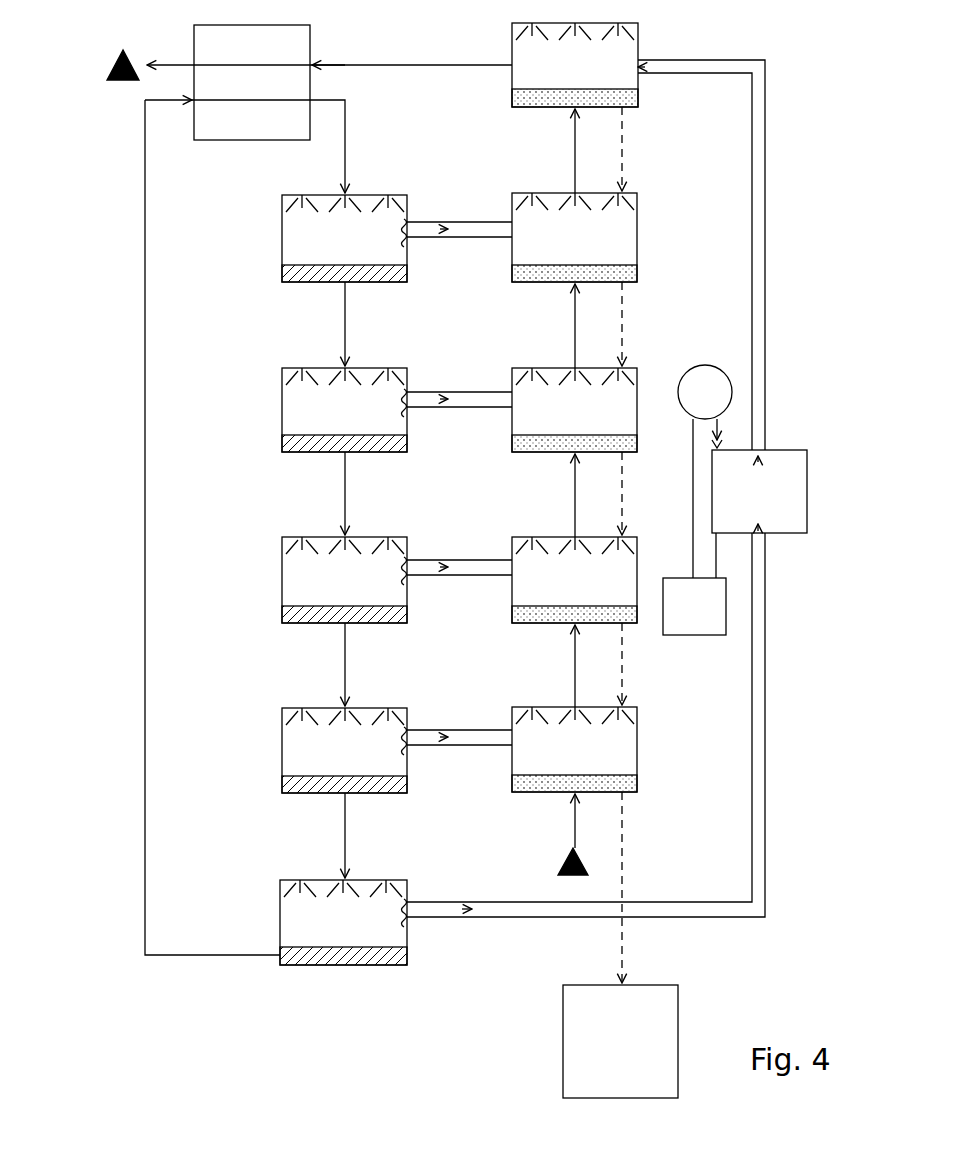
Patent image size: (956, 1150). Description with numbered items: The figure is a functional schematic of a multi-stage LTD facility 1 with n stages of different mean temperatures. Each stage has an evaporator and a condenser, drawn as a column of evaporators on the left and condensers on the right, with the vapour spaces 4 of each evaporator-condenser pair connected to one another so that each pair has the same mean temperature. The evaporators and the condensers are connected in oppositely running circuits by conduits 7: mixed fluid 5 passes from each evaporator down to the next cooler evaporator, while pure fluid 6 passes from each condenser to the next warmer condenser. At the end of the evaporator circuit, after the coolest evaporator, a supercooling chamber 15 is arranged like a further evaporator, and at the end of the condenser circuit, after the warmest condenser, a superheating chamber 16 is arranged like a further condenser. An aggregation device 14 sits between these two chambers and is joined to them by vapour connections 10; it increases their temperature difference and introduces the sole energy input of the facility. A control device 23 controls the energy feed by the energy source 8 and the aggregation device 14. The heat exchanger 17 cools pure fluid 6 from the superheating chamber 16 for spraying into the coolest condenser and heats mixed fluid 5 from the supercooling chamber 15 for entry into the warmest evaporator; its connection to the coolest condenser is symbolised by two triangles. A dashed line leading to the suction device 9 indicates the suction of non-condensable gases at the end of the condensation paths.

The LTD facility 1 is at (113, 215).
The vapour space 4 is at (520, 245).
The mixed fluid 5 is at (292, 212).
The pure fluid 6 is at (525, 38).
The conduit 7 is at (441, 65).
The energy source 8 is at (705, 406).
The suction device 9 is at (620, 1041).
The vapour connection 10 is at (757, 237).
The aggregation device 14 is at (759, 491).
The supercooling chamber 15 is at (343, 922).
The superheating chamber 16 is at (575, 65).
The heat exchanger 17 is at (252, 82).
The control device 23 is at (694, 527).